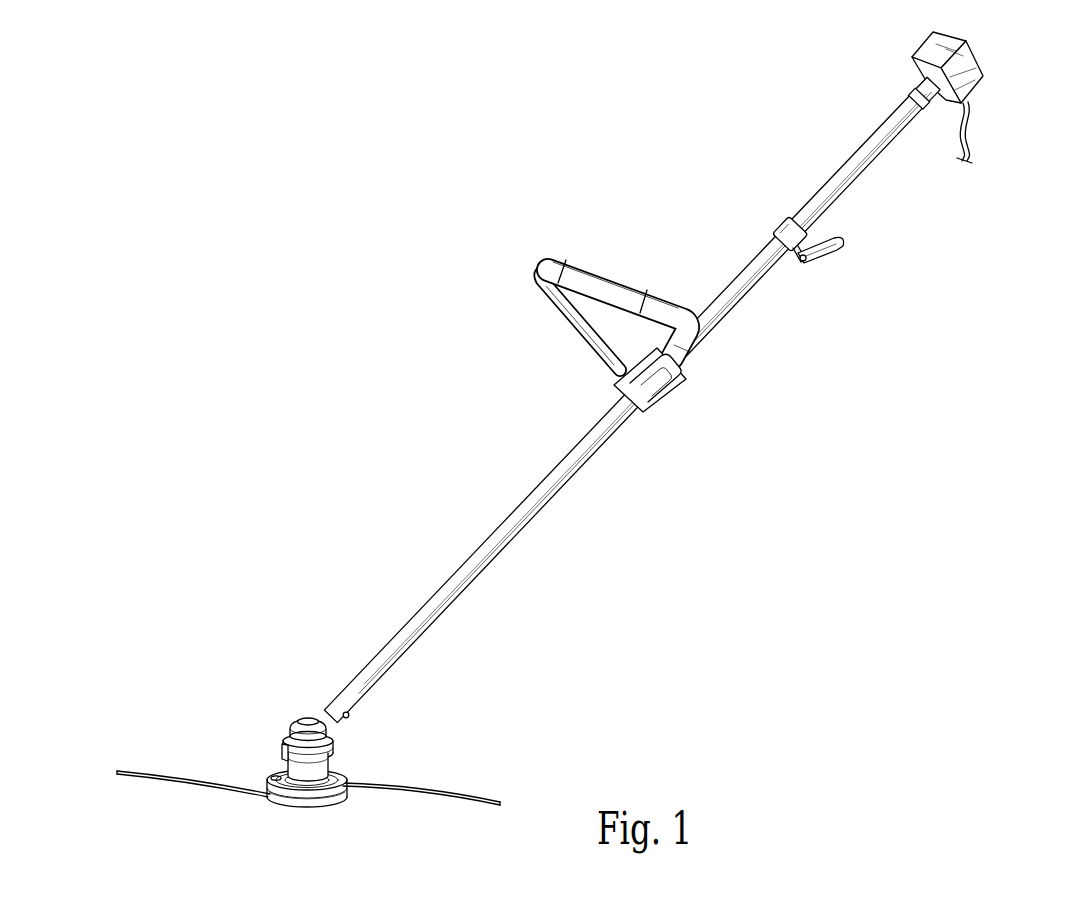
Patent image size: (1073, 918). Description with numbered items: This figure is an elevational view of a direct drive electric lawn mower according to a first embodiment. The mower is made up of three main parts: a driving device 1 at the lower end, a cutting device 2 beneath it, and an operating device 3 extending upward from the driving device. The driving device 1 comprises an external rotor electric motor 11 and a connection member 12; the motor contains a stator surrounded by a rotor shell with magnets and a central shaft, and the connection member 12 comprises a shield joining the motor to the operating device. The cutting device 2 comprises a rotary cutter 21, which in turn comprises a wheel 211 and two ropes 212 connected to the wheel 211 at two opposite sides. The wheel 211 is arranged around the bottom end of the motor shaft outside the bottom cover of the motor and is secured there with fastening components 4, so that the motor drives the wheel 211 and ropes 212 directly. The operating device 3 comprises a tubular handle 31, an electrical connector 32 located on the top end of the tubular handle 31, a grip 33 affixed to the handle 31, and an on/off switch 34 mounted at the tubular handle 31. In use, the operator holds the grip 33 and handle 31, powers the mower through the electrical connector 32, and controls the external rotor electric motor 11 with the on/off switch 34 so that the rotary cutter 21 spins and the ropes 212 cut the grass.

The driving device 1 is at (316, 723).
The external rotor electric motor 11 is at (349, 753).
The connection member 12 is at (301, 713).
The cutting device 2 is at (308, 772).
The rotary cutter 21 is at (296, 772).
The wheel 211 is at (268, 776).
The ropes 212 is at (228, 786).
The operating device 3 is at (683, 377).
The tubular handle 31 is at (540, 503).
The electrical connector 32 is at (978, 70).
The grip 33 is at (565, 258).
The on/off switch 34 is at (815, 252).
The fastening components 4 is at (350, 717).